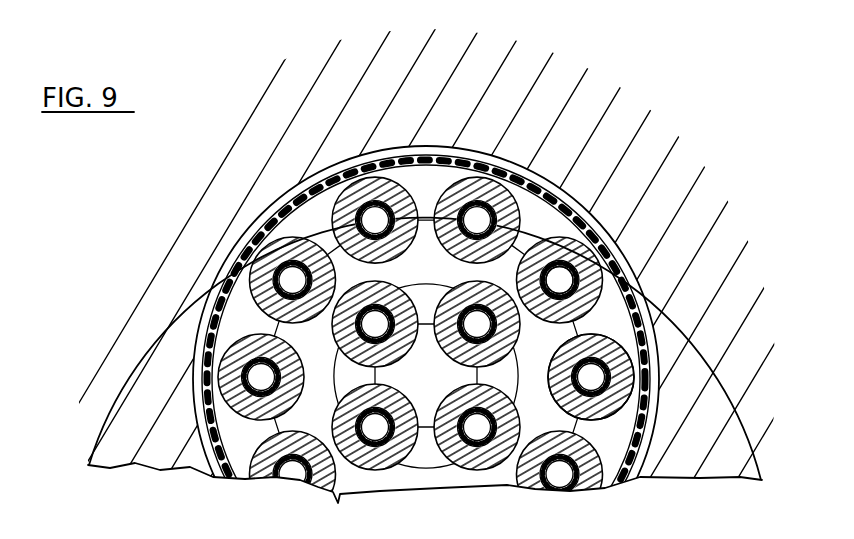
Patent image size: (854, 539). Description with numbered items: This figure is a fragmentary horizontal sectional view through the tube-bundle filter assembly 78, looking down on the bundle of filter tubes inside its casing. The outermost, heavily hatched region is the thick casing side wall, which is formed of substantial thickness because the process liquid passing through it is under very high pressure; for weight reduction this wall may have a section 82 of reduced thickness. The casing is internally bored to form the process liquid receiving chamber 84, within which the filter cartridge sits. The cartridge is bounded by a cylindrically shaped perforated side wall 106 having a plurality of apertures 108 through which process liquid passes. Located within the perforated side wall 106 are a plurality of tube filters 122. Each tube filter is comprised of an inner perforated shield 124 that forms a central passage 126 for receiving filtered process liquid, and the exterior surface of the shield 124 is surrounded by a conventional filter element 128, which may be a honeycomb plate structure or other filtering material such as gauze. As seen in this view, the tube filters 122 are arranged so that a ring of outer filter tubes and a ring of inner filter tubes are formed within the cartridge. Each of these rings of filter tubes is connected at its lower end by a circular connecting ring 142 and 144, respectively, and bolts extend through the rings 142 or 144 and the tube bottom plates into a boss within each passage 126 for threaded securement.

The filter assembly 78 is at (690, 112).
The section of reduced thickness 82 is at (265, 76).
The process liquid receiving chamber 84 is at (253, 307).
The perforated side wall 106 is at (466, 150).
The apertures 108 is at (312, 185).
The tube filters 122 is at (442, 180).
The inner perforated shield 124 is at (566, 250).
The central passage 126 is at (572, 273).
The filter element 128 is at (618, 388).
The circular connecting ring 142 is at (429, 222).
The circular connecting ring 144 is at (430, 400).